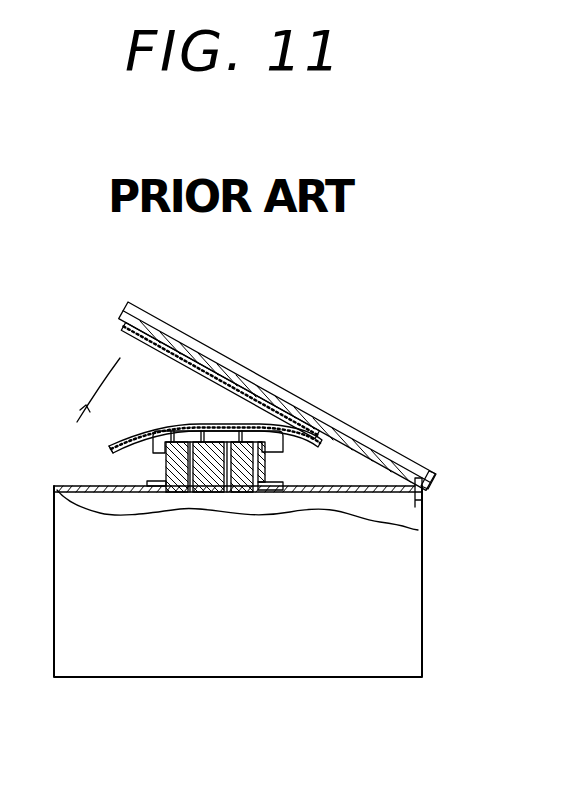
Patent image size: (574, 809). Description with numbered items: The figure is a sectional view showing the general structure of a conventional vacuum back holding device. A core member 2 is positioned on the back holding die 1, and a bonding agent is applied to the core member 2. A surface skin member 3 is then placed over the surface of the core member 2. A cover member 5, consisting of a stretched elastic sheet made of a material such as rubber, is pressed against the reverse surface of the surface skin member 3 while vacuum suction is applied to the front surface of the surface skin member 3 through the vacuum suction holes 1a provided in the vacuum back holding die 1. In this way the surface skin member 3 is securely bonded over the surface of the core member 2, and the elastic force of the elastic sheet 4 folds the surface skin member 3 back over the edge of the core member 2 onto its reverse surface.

The back holding die 1 is at (207, 490).
The vacuum suction holes 1a is at (263, 466).
The core member 2 is at (183, 427).
The surface skin member 3 is at (128, 433).
The elastic sheet 4 is at (232, 397).
The cover member 5 is at (290, 392).